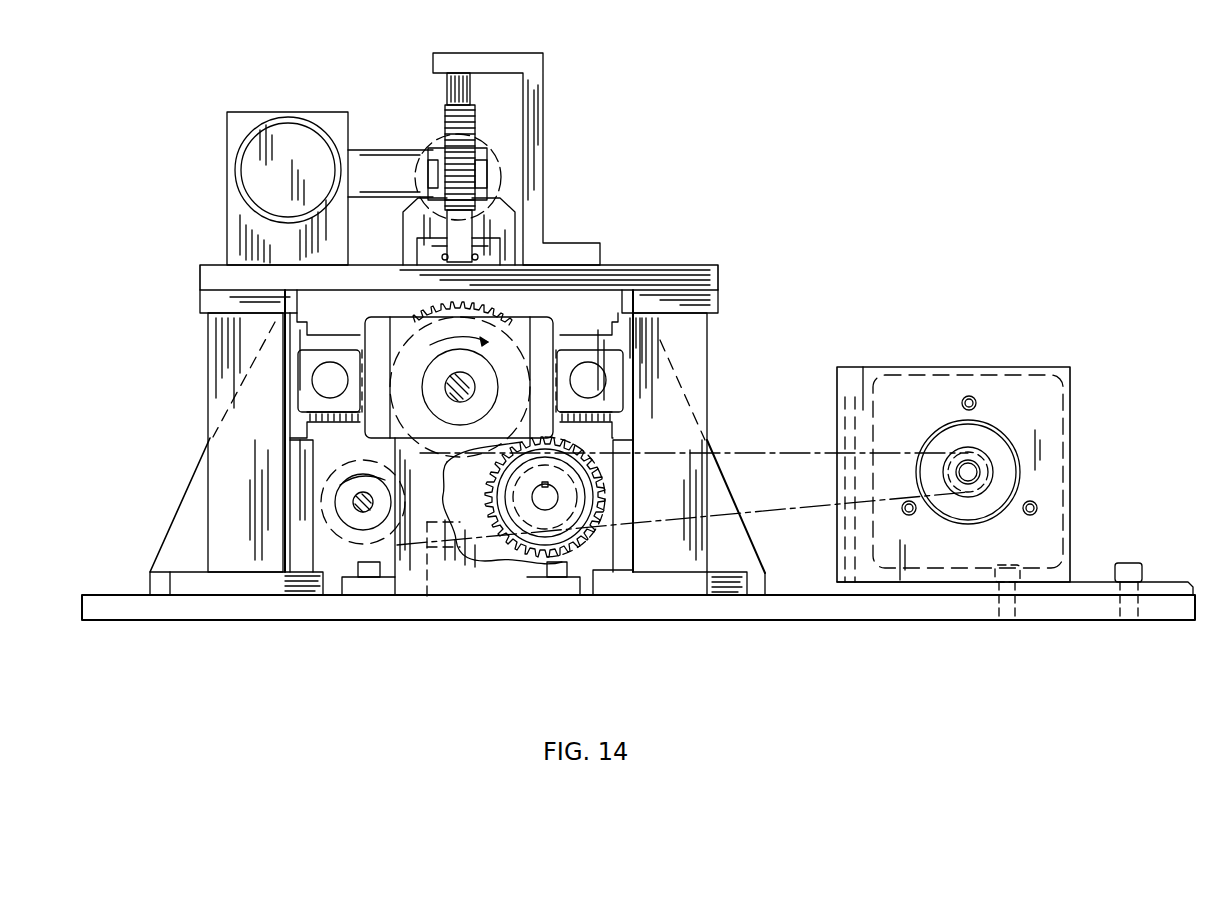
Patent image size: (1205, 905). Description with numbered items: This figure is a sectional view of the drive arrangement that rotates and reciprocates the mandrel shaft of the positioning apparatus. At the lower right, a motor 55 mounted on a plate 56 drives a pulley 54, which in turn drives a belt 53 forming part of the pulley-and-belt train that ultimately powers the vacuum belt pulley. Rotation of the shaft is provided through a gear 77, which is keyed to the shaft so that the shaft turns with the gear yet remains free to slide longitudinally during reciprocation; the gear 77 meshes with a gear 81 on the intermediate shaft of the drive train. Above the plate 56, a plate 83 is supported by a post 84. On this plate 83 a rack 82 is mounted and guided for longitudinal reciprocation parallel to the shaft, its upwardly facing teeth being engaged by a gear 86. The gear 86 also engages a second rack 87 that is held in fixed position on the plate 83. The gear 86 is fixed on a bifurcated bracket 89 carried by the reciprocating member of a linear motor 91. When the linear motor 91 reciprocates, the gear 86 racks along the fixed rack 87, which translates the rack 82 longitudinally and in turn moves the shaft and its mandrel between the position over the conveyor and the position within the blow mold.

The belt 53 is at (755, 452).
The pulley 54 is at (1005, 480).
The motor 55 is at (1047, 418).
The plate 56 is at (923, 602).
The gear 77 is at (490, 312).
The gear 81 is at (605, 490).
The rack 82 is at (520, 242).
The plate 83 is at (650, 280).
The post 84 is at (213, 385).
The gear 86 is at (445, 113).
The second rack 87 is at (447, 93).
The bifurcated bracket 89 is at (485, 190).
The linear motor 91 is at (480, 137).